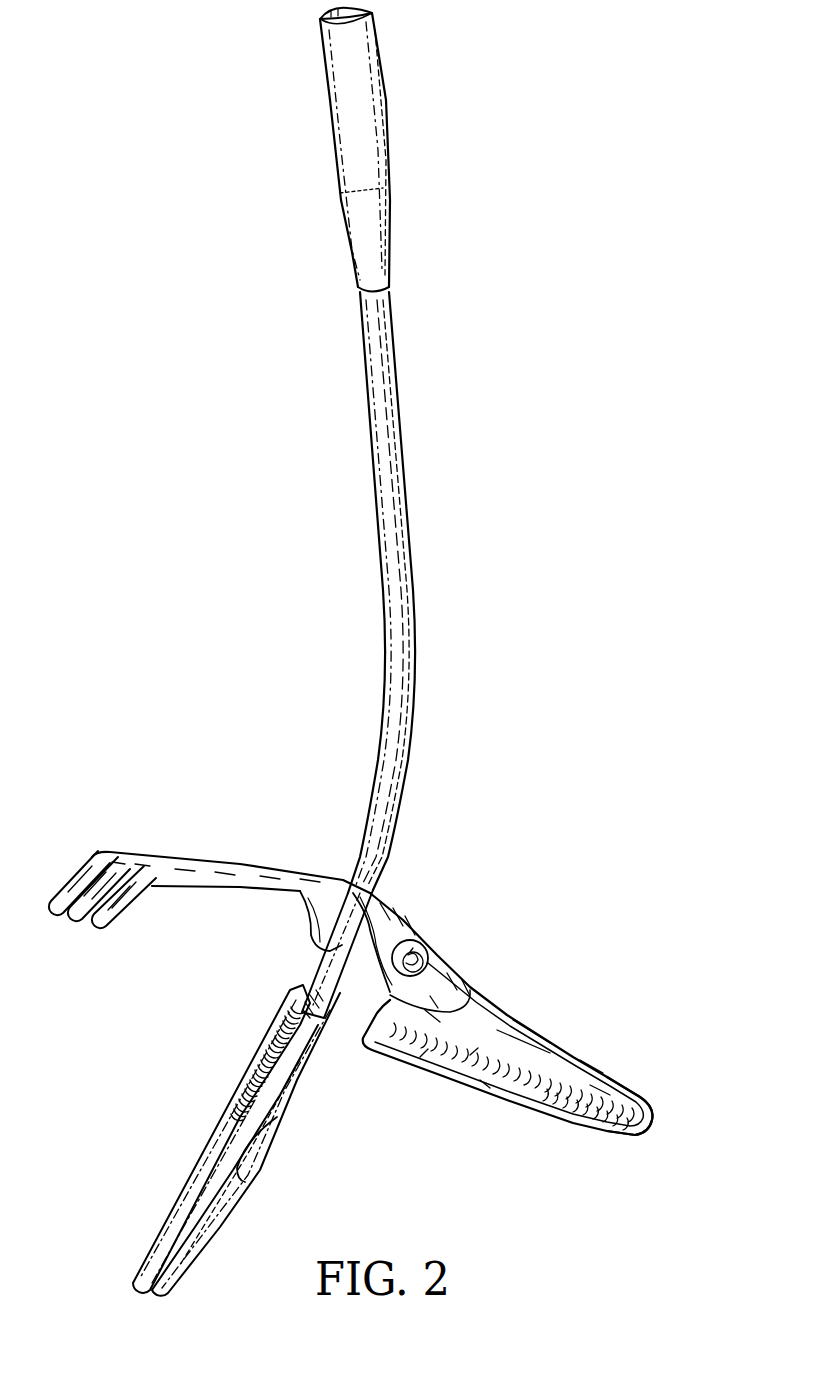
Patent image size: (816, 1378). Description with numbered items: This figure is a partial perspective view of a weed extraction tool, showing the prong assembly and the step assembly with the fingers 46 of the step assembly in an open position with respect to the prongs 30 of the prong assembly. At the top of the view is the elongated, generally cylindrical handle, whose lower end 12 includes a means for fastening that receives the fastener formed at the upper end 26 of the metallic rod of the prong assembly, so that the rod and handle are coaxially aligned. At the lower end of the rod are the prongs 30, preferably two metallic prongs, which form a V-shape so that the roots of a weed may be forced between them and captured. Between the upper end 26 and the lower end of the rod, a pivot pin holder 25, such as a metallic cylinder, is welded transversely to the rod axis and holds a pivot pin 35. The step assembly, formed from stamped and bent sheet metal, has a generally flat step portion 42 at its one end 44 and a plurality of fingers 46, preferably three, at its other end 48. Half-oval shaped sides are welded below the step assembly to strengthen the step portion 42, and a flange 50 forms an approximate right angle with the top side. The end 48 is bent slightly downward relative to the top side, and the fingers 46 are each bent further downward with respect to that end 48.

The lower end 12 is at (418, 182).
The upper end 26 is at (430, 339).
The end 48 is at (191, 802).
The fingers 46 is at (68, 886).
The one end 44 is at (560, 968).
The step portion 42 is at (592, 1052).
The pivot pin 35 is at (446, 964).
The pivot pin holder 25 is at (356, 963).
The flange 50 is at (515, 1093).
The prongs 30 is at (172, 1272).